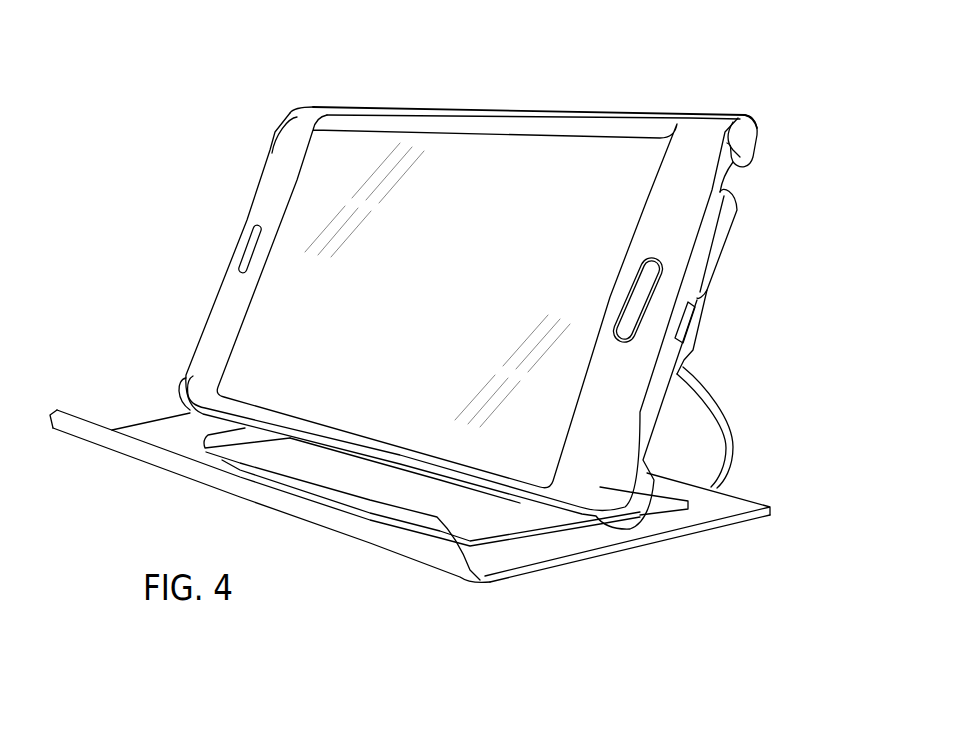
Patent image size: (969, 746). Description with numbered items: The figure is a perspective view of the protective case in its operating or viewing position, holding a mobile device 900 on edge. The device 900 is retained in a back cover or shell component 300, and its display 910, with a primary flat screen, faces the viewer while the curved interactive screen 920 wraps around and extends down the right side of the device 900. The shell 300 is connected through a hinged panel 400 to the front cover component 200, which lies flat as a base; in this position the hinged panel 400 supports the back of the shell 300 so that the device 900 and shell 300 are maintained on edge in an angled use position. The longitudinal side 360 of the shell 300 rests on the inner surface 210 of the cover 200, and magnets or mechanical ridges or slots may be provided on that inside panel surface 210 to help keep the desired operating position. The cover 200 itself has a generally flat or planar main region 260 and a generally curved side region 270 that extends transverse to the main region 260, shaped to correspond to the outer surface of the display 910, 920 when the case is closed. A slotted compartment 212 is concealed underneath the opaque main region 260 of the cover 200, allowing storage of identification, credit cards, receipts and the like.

The mobile device 900 is at (692, 152).
The curved interactive screen 920 is at (372, 117).
The display 910 is at (343, 140).
The back cover or shell component 300 is at (745, 145).
The panel 400 is at (740, 441).
The front cover component 200 is at (612, 548).
The main region 260 is at (645, 547).
The inner surface 210 is at (157, 426).
The curved side region 270 is at (190, 468).
The longitudinal side 360 is at (513, 510).
The slotted compartment 212 is at (258, 442).